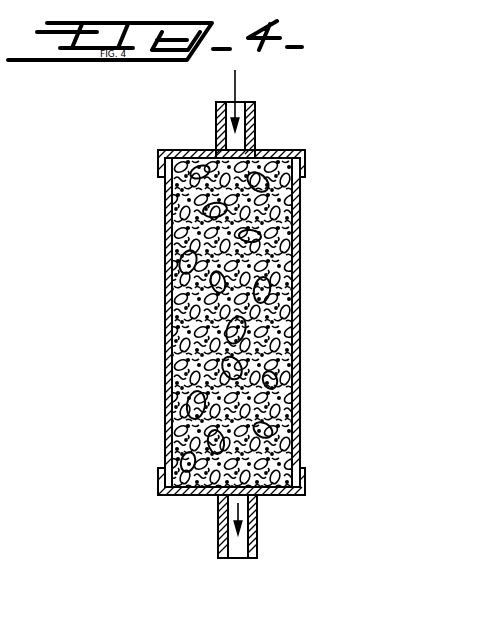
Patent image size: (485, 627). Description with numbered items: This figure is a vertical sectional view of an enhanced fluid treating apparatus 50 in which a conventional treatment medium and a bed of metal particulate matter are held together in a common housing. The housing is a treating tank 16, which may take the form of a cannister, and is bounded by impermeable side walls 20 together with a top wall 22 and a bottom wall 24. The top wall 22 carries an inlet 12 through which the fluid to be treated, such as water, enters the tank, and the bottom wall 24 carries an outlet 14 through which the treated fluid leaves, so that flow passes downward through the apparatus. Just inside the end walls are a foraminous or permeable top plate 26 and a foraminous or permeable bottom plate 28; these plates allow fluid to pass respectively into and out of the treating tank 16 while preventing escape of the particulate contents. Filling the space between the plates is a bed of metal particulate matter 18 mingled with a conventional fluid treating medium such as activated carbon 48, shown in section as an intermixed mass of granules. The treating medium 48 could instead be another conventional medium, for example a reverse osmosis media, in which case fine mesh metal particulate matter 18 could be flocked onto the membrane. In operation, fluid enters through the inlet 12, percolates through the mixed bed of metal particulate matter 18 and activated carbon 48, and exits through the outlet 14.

The inlet 12 is at (257, 130).
The outlet 14 is at (257, 527).
The treating tank 16 is at (300, 423).
The bed of metal particulate matter 18 is at (171, 198).
The side walls 20 is at (168, 343).
The top wall 22 is at (185, 150).
The bottom wall 24 is at (188, 497).
The top plate 26 is at (236, 152).
The bottom plate 28 is at (218, 497).
The activated carbon 48 is at (175, 257).
The apparatus 50 is at (130, 372).